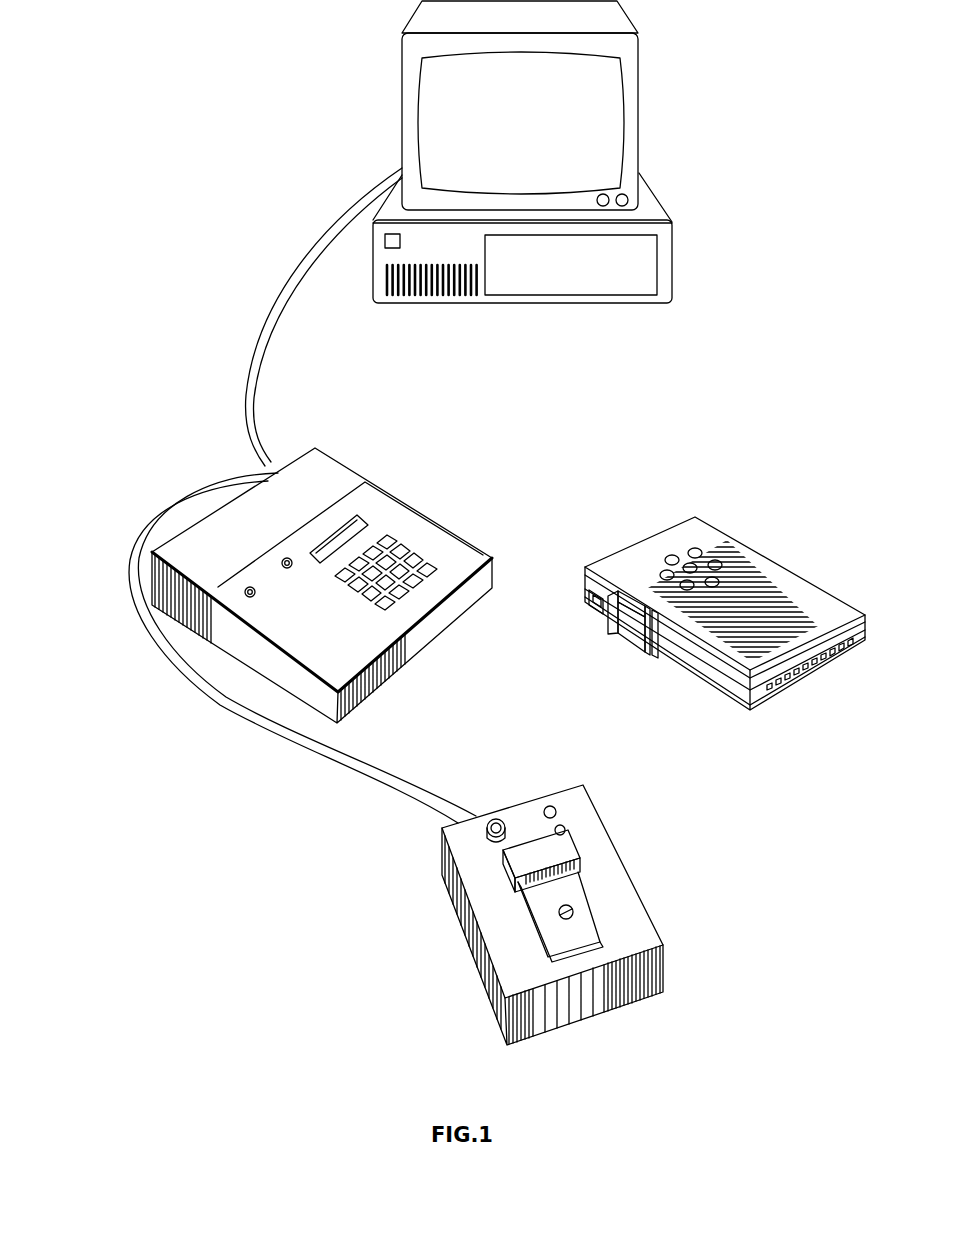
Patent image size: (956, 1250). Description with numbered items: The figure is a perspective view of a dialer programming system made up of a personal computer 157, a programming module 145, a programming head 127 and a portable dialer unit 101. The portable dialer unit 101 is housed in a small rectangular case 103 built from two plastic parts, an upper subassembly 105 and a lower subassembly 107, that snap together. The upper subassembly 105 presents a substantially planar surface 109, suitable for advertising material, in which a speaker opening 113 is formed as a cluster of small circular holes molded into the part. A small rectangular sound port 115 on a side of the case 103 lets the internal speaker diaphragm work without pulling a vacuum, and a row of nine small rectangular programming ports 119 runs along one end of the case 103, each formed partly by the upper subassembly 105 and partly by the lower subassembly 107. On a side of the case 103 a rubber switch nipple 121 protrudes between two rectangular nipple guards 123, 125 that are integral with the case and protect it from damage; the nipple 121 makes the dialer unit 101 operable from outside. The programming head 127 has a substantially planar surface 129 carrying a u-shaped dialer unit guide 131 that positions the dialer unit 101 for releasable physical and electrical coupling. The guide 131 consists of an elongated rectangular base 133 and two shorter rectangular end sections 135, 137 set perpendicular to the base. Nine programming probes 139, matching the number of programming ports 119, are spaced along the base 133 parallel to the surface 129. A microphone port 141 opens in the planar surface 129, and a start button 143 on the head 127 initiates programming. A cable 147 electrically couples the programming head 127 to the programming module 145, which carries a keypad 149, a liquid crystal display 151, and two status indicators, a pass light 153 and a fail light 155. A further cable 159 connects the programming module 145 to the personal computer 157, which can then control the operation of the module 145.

The portable dialer unit 101 is at (695, 609).
The rectangular case 103 is at (803, 598).
The upper subassembly 105 is at (733, 668).
The lower subassembly 107 is at (705, 672).
The substantially planar surface 109 is at (635, 562).
The speaker opening 113 is at (688, 563).
The sound port 115 is at (588, 602).
The programming ports 119 is at (800, 643).
The rubber switch nipple 121 is at (633, 650).
The nipple guard 123 is at (608, 628).
The nipple guard 125 is at (651, 657).
The programming head 127 is at (522, 892).
The substantially planar surface 129 is at (503, 923).
The dialer unit guide 131 is at (543, 850).
The elongated rectangular base 133 is at (525, 851).
The rectangular end section 135 is at (578, 860).
The rectangular end section 137 is at (512, 875).
The programming probes 139 is at (565, 878).
The microphone port 141 is at (568, 912).
The start button 143 is at (492, 822).
The programming module 145 is at (322, 562).
The cable 147 is at (157, 522).
The keypad 149 is at (389, 582).
The liquid crystal display 151 is at (344, 536).
The pass light 153 is at (285, 558).
The fail light 155 is at (245, 589).
The personal computer 157 is at (650, 118).
The cable 159 is at (290, 285).